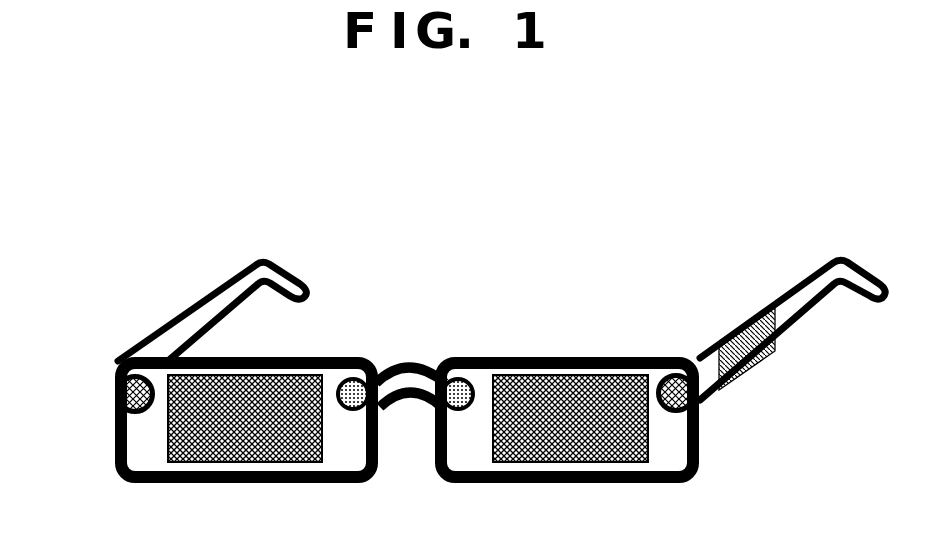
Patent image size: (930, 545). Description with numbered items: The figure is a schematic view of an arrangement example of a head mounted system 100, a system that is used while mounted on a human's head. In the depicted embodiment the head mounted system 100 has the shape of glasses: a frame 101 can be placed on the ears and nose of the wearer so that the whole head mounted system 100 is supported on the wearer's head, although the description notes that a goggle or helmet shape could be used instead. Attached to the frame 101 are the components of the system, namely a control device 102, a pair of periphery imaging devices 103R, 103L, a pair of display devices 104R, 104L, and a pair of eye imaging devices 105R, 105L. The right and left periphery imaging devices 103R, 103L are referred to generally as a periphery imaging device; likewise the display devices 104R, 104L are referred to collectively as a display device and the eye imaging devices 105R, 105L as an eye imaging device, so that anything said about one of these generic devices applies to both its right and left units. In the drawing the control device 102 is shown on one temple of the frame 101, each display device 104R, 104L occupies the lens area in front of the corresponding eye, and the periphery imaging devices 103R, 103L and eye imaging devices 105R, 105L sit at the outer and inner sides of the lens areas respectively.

The head mounted system 100 is at (368, 212).
The frame 101 is at (823, 262).
The control device 102 is at (753, 369).
The periphery imaging device 103R is at (112, 389).
The periphery imaging device 103L is at (675, 373).
The display device 104R is at (254, 374).
The display device 104L is at (568, 375).
The eye imaging device 105R is at (350, 373).
The eye imaging device 105L is at (462, 378).